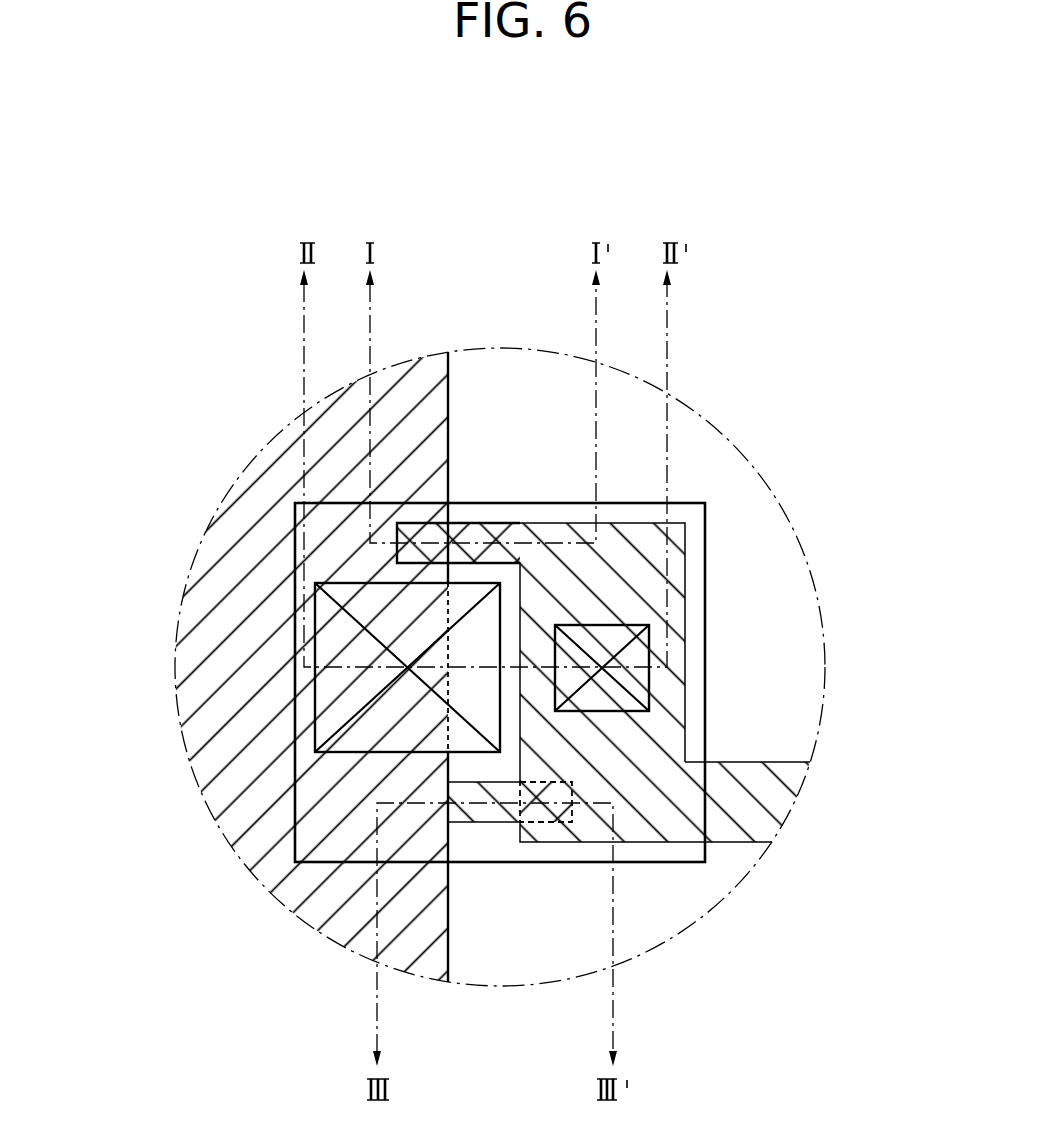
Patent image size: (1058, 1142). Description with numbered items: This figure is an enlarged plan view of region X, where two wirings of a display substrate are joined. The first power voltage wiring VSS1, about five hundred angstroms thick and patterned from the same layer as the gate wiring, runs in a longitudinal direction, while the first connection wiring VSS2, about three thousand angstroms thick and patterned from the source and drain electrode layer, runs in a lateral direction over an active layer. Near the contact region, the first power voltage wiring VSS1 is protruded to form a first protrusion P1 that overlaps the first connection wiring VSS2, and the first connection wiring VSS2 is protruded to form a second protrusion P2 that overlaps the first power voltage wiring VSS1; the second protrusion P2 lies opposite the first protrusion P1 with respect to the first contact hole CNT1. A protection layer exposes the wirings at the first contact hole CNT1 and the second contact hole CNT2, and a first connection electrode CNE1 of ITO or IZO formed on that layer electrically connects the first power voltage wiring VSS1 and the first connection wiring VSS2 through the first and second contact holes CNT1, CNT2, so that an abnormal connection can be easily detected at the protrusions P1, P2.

The region X is at (479, 134).
The first power voltage wiring VSS1 is at (213, 570).
The first connection wiring VSS2 is at (768, 792).
The first connection electrode CNE1 is at (705, 660).
The first contact hole CNT1 is at (337, 703).
The second contact hole CNT2 is at (605, 622).
The first protrusion P1 is at (503, 808).
The second protrusion P2 is at (487, 525).